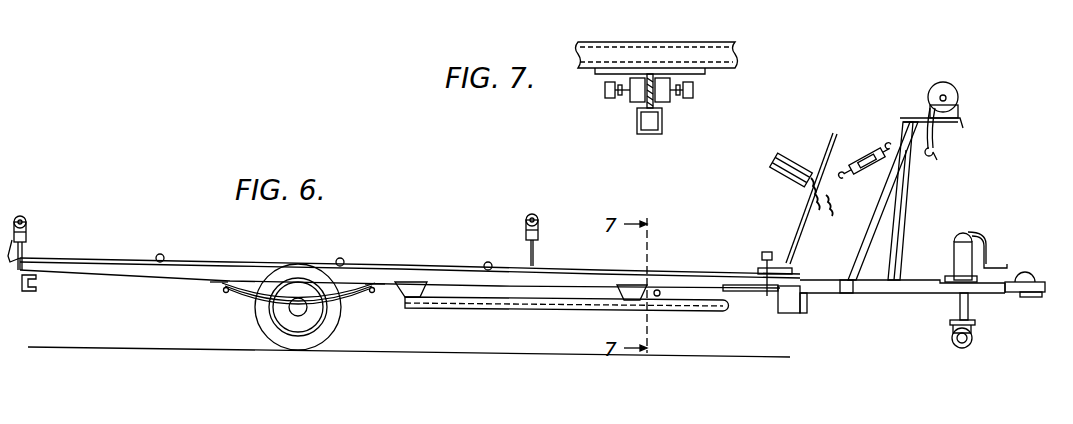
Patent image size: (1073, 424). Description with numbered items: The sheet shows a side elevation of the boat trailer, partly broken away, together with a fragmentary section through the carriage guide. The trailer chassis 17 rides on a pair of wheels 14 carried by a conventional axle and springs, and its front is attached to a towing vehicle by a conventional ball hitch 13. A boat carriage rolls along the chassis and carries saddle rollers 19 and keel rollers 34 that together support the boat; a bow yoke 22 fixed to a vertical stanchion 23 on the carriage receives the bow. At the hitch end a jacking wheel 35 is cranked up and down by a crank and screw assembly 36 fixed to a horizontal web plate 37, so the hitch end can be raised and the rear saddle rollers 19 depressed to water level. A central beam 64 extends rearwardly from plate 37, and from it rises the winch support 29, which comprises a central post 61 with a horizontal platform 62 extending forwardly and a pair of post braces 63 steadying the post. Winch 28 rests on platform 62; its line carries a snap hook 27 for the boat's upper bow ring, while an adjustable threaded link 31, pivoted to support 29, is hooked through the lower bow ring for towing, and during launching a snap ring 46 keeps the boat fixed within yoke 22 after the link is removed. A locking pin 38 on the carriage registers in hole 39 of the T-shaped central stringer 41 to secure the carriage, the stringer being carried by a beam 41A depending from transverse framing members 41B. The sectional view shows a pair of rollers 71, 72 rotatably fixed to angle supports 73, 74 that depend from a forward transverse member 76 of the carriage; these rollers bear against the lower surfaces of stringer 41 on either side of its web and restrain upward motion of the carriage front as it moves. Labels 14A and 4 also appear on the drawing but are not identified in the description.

In FIG. 6, the ball hitch 13 is at (1027, 272).
In FIG. 6, the wheels 14 is at (330, 320).
In FIG. 6, the wheel fender 14A is at (302, 0).
In FIG. 6, the frame (clipped numeral 14) 4 is at (10, 252).
In FIG. 6, the trailer chassis 17 is at (190, 284).
In FIG. 6, the saddle rollers 19 is at (26, 222).
In FIG. 6, the bow yoke 22 is at (775, 160).
In FIG. 6, the vertical stanchion 23 is at (816, 170).
In FIG. 6, the snap hook 27 is at (937, 160).
In FIG. 6, the winch 28 is at (955, 88).
In FIG. 6, the winch support 29 is at (900, 140).
In FIG. 6, the adjustable threaded link 31 is at (860, 156).
In FIG. 6, the keel rollers 34 is at (164, 256).
In FIG. 6, the jacking wheel 35 is at (972, 338).
In FIG. 6, the crank and screw assembly 36 is at (984, 246).
In FIG. 6, the horizontal web plate 37 is at (956, 250).
In FIG. 6, the locking pin 38 is at (764, 250).
In FIG. 6, the hole 39 is at (768, 300).
In FIG. 6, the central stringer 41 is at (722, 312).
In FIG. 7, the central stringer 41 is at (650, 74).
In FIG. 6, the beam 41A is at (527, 309).
In FIG. 7, the beam 41A is at (645, 134).
In FIG. 6, the transverse framing members 41B is at (412, 300).
In FIG. 6, the snap ring 46 is at (830, 212).
In FIG. 6, the central post 61 is at (852, 262).
In FIG. 6, the horizontal platform 62 is at (950, 118).
In FIG. 6, the post braces 63 is at (906, 200).
In FIG. 6, the central beam 64 is at (878, 295).
In FIG. 7, the roller 71 is at (638, 96).
In FIG. 6, the roller 72 is at (660, 298).
In FIG. 7, the roller 72 is at (660, 96).
In FIG. 7, the angle support 73 is at (600, 73).
In FIG. 7, the angle support 74 is at (700, 74).
In FIG. 7, the forward transverse member 76 is at (692, 46).